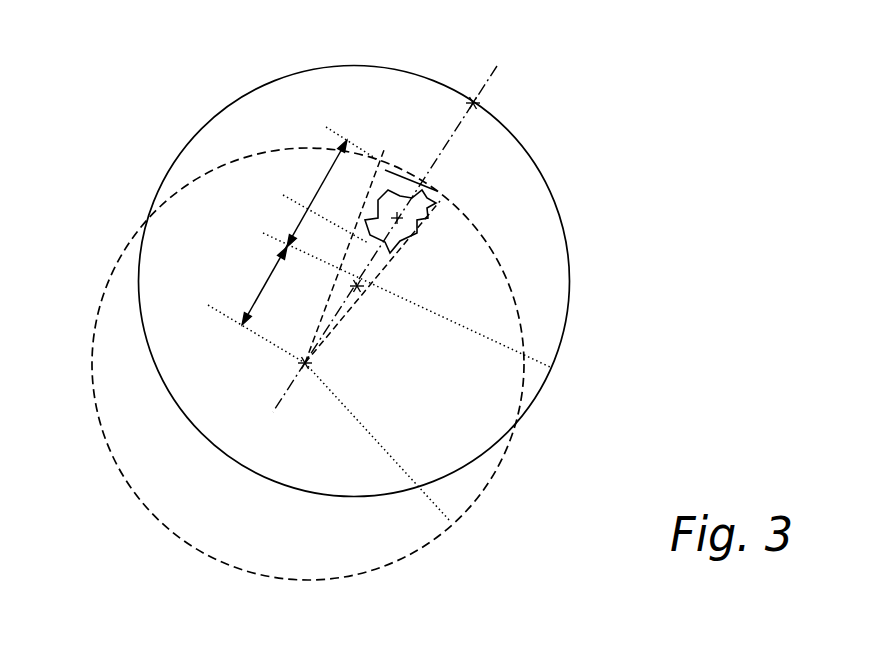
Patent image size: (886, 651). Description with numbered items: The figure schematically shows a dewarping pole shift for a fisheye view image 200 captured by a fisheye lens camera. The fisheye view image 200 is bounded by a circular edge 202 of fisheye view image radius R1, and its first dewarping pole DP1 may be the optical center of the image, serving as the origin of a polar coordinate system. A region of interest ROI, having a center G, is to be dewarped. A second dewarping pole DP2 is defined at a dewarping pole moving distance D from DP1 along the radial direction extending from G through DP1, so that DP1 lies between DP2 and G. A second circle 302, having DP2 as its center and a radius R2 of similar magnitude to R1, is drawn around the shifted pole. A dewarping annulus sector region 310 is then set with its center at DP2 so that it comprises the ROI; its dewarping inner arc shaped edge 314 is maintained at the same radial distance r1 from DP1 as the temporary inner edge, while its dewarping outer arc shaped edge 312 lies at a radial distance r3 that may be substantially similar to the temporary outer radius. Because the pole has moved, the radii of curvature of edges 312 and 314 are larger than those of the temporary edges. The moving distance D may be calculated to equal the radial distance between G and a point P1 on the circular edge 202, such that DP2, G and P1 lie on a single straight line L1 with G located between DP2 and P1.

The fisheye view image 200 is at (336, 275).
The circular edge 202 is at (198, 135).
The second circle 302 is at (98, 428).
The dewarping annulus sector region 310 is at (387, 181).
The dewarping outer arc shaped edge 312 is at (404, 168).
The dewarping inner arc shaped edge 314 is at (352, 256).
The radial distance of inner arc shaped edge r1 is at (265, 235).
The radial distance of dewarping outer arc shaped edge r3 is at (285, 195).
The point on edge of fisheye view image P1 is at (473, 102).
The straight line L1 is at (437, 191).
The region of interest ROI is at (508, 133).
The center of the ROI G is at (397, 220).
The first dewarping pole DP1 is at (368, 299).
The second dewarping pole DP2 is at (328, 371).
The fisheye view image radius R1 is at (533, 360).
The radius of second circle R2 is at (450, 521).
The dewarping pole moving distance D is at (250, 290).